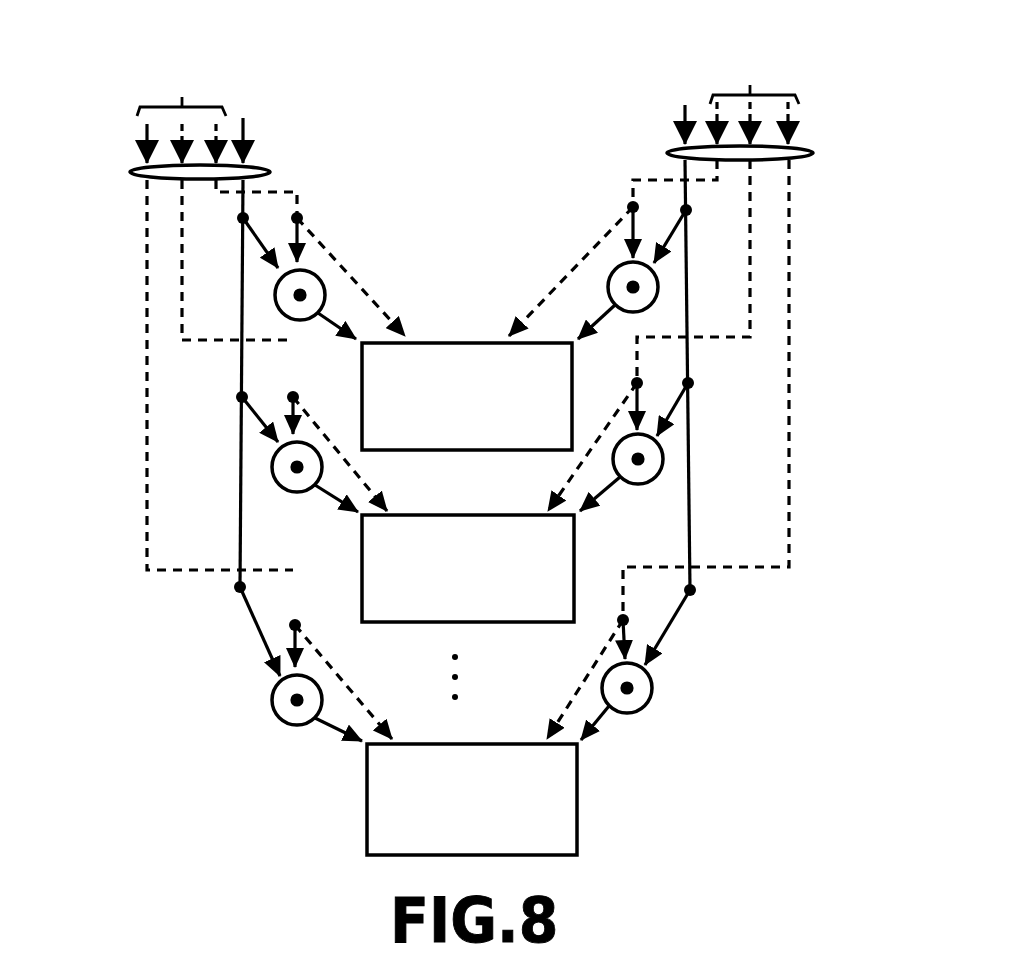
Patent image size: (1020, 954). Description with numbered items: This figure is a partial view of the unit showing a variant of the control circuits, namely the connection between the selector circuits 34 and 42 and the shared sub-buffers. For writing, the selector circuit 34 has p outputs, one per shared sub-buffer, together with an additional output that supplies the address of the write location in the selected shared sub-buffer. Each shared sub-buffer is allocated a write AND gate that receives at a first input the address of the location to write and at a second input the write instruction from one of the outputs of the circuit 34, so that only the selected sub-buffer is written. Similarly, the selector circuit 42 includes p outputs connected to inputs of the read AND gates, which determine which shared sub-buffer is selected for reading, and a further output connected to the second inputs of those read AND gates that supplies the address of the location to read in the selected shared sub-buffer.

The selector circuit 34 is at (238, 92).
The selector circuit 42 is at (816, 82).